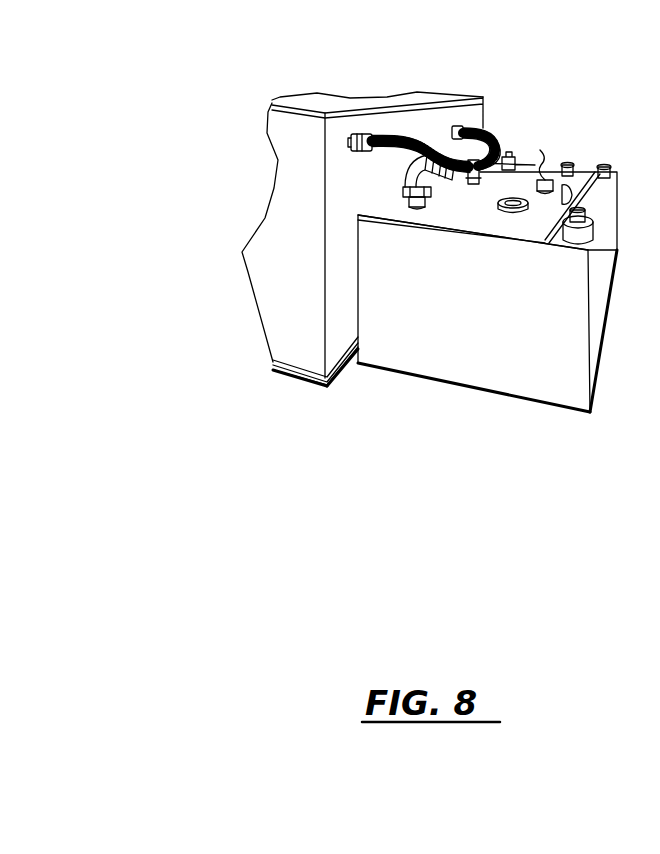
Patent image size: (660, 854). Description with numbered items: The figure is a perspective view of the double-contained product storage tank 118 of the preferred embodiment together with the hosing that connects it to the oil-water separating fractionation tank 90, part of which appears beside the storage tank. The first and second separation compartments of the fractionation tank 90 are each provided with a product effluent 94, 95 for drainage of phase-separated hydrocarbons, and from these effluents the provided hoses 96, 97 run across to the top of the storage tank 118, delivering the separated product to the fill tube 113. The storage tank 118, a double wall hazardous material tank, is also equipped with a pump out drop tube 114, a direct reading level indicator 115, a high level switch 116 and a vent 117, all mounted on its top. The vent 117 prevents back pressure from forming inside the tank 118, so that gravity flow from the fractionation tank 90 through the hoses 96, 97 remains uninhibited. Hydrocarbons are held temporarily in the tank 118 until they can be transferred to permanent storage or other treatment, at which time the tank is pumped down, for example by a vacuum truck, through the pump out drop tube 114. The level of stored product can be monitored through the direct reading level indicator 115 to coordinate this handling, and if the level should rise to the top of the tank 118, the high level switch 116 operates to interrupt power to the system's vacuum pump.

The oil-water separating fractionation tank 90 is at (257, 158).
The product effluent 94 is at (453, 124).
The product effluent 95 is at (360, 132).
The hose 96 is at (477, 158).
The hose 97 is at (425, 134).
The fill tube 113 is at (471, 181).
The pump out drop tube 114 is at (415, 188).
The direct reading level indicator 115 is at (501, 164).
The high level switch 116 is at (543, 172).
The vent 117 is at (577, 233).
The double-contained product storage tank 118 is at (407, 458).